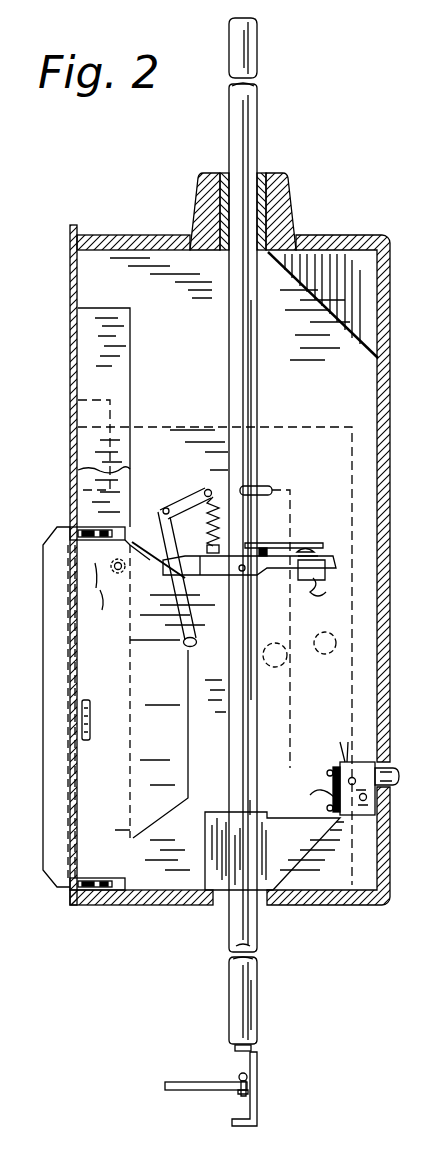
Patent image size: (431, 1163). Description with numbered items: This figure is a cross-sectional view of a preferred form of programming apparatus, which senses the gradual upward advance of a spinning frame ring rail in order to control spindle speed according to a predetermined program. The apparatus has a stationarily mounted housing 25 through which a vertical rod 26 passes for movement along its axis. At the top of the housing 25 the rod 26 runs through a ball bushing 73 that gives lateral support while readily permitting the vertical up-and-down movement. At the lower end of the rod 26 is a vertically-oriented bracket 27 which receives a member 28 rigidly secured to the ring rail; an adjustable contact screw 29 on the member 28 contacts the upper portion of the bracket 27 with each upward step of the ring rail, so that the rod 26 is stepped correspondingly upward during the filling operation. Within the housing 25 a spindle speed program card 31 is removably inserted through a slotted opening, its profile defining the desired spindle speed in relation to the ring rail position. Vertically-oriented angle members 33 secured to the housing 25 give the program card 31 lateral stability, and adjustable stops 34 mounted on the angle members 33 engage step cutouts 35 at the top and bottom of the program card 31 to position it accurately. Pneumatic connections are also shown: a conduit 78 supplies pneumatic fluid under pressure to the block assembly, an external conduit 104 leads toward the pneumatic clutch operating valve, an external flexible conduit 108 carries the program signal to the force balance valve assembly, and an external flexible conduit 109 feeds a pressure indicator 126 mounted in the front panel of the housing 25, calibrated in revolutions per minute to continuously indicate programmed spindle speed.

The housing 25 is at (318, 235).
The ball bushing 73 is at (266, 195).
The angle members 33 is at (131, 354).
The pressure indicator 126 is at (76, 427).
The adjustable stops 34 is at (120, 527).
The step cutouts 35 is at (90, 877).
The external conduit 104 is at (263, 487).
The external flexible conduit 108 is at (343, 746).
The external flexible conduit 109 is at (346, 760).
The conduit 78 is at (386, 766).
The spindle speed program card 31 is at (51, 887).
The vertical rod 26 is at (258, 1001).
The bracket 27 is at (258, 1091).
The member 28 is at (184, 1092).
The adjustable contact screw 29 is at (239, 1078).